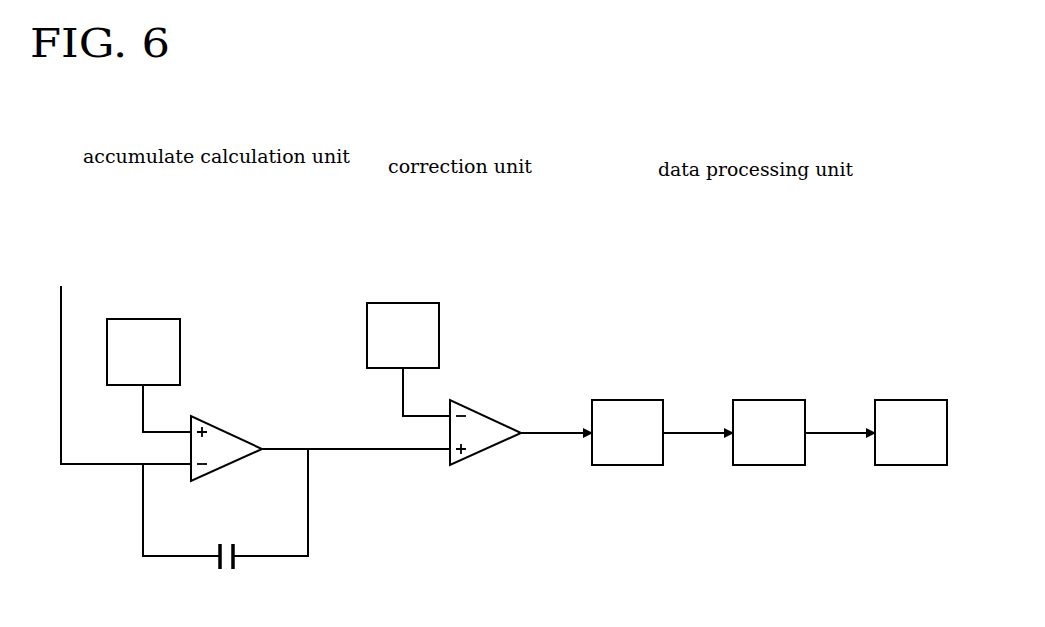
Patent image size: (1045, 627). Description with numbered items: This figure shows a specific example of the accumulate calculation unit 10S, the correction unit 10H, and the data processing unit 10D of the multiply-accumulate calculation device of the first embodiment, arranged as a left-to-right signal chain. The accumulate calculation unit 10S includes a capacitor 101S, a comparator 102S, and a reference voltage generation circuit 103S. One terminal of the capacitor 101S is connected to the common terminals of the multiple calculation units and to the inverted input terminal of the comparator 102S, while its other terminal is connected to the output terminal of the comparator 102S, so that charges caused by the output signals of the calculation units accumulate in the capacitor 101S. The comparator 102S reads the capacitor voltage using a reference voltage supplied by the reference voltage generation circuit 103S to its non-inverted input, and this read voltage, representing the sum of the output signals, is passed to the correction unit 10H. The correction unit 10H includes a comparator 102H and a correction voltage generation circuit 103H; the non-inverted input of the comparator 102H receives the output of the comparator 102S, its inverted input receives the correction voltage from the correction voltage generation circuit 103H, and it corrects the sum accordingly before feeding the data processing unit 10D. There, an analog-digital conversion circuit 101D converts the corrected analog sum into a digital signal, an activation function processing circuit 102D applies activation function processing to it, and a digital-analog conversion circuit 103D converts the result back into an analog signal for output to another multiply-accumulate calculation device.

The accumulate calculation unit 10S is at (110, 237).
The capacitor 101S is at (240, 551).
The comparator 102S is at (230, 433).
The reference voltage generation circuit 103S is at (147, 319).
The correction unit 10H is at (370, 237).
The comparator 102H is at (490, 417).
The correction voltage generation circuit 103H is at (405, 303).
The data processing unit 10D is at (652, 237).
The analog-digital conversion circuit 101D is at (664, 408).
The activation function processing circuit 102D is at (770, 400).
The digital-analog conversion circuit 103D is at (875, 410).